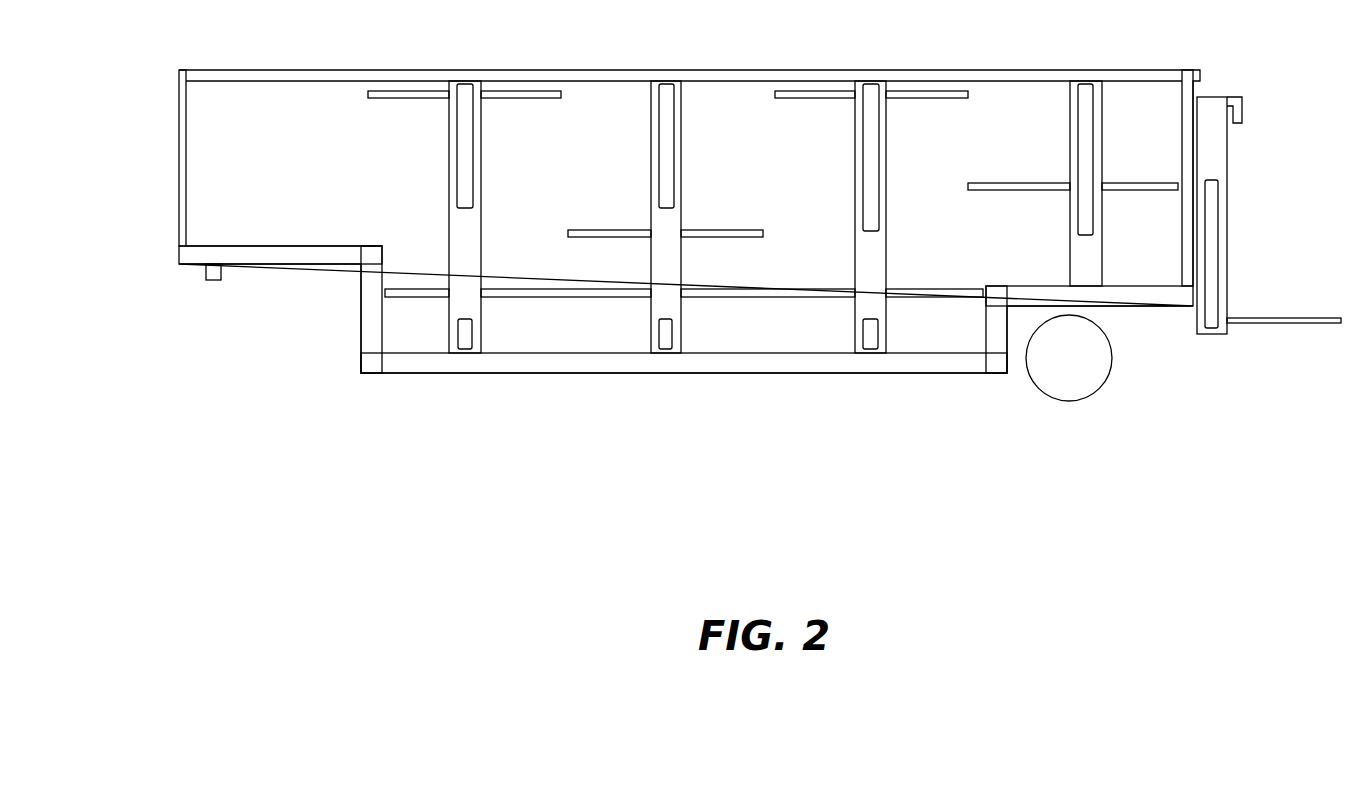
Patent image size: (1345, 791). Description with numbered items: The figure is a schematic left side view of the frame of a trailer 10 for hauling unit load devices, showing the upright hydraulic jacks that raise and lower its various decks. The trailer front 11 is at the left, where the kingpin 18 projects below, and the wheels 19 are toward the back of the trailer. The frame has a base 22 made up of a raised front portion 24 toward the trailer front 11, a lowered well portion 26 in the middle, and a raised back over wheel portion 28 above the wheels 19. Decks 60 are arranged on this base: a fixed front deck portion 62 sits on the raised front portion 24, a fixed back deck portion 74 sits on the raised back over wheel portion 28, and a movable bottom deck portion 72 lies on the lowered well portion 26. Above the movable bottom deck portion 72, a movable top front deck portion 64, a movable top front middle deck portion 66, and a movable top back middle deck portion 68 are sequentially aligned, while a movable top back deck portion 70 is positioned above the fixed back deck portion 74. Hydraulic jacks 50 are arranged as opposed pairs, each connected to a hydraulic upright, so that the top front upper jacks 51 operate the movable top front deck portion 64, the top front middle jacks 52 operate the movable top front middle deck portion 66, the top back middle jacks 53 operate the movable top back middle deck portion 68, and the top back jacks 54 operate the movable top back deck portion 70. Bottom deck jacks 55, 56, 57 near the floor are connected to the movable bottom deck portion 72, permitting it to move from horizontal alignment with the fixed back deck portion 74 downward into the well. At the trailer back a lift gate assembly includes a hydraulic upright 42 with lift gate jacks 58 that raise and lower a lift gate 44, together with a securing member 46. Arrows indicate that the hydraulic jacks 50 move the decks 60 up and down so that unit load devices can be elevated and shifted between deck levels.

The trailer 10 is at (503, 391).
The trailer front 11 is at (180, 152).
The kingpin 18 is at (214, 283).
The wheels 19 is at (1073, 383).
The base 22 is at (376, 363).
The raised front portion 24 is at (327, 255).
The lowered well portion 26 is at (780, 365).
The raised back over wheel portion 28 is at (1122, 296).
The hydraulic upright 42 is at (1213, 165).
The lift gate 44 is at (1282, 320).
The securing member 46 is at (1243, 103).
The hydraulic jacks 50 is at (735, 135).
The top front upper jacks 51 is at (463, 145).
The top front middle jacks 52 is at (663, 158).
The top back middle jacks 53 is at (868, 163).
The top back jacks 54 is at (1083, 148).
The bottom deck/floor jack 55 is at (465, 337).
The bottom deck/floor jack 56 is at (666, 328).
The bottom deck/floor jack 57 is at (870, 337).
The lift gate jacks 58 is at (1210, 270).
The decks 60 is at (753, 242).
The fixed front deck portion 62 is at (265, 247).
The movable top front deck portion 64 is at (410, 92).
The movable top front middle deck portion 66 is at (612, 238).
The movable top back middle deck portion 68 is at (935, 91).
The movable top back deck portion 70 is at (987, 183).
The movable bottom deck portion 72 is at (716, 292).
The fixed back deck portion 74 is at (1015, 286).